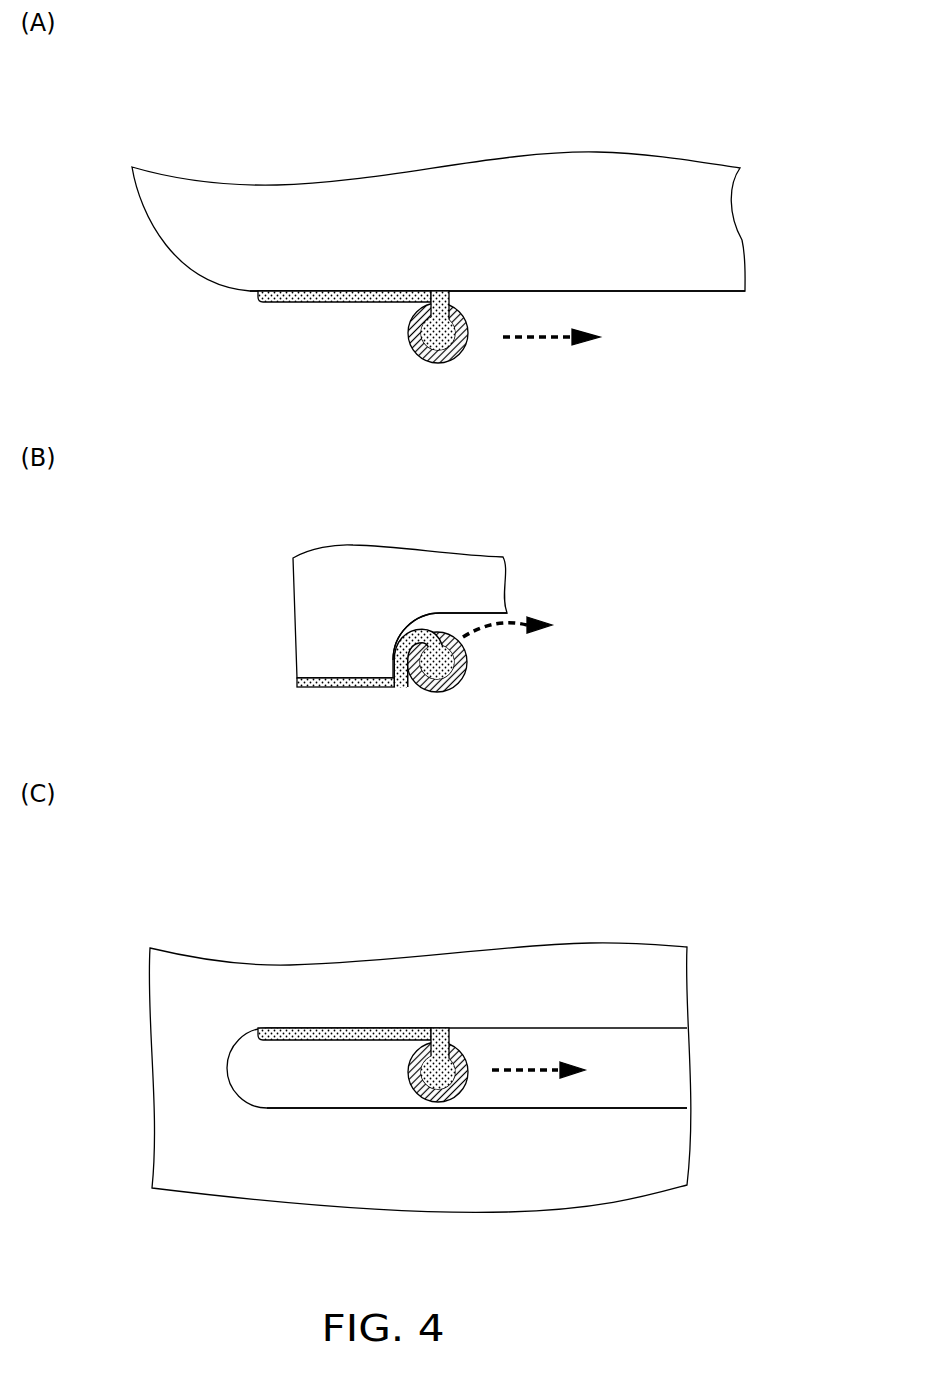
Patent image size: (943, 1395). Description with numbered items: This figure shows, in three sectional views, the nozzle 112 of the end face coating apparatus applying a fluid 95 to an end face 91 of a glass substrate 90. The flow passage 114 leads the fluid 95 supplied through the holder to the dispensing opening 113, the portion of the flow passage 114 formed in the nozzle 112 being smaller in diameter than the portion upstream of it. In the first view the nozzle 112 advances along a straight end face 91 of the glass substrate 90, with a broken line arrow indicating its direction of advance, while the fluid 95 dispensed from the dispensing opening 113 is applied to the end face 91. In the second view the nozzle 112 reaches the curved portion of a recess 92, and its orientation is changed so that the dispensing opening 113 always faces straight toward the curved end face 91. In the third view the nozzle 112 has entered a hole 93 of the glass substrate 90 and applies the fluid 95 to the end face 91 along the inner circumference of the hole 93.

The glass substrate 90 is at (463, 172).
The end face 91 is at (697, 292).
The recess 92 is at (443, 612).
The hole 93 is at (622, 1033).
The fluid 95 is at (283, 303).
The nozzle 112 is at (437, 363).
The dispensing opening 113 is at (433, 291).
The flow passage 114 is at (423, 330).